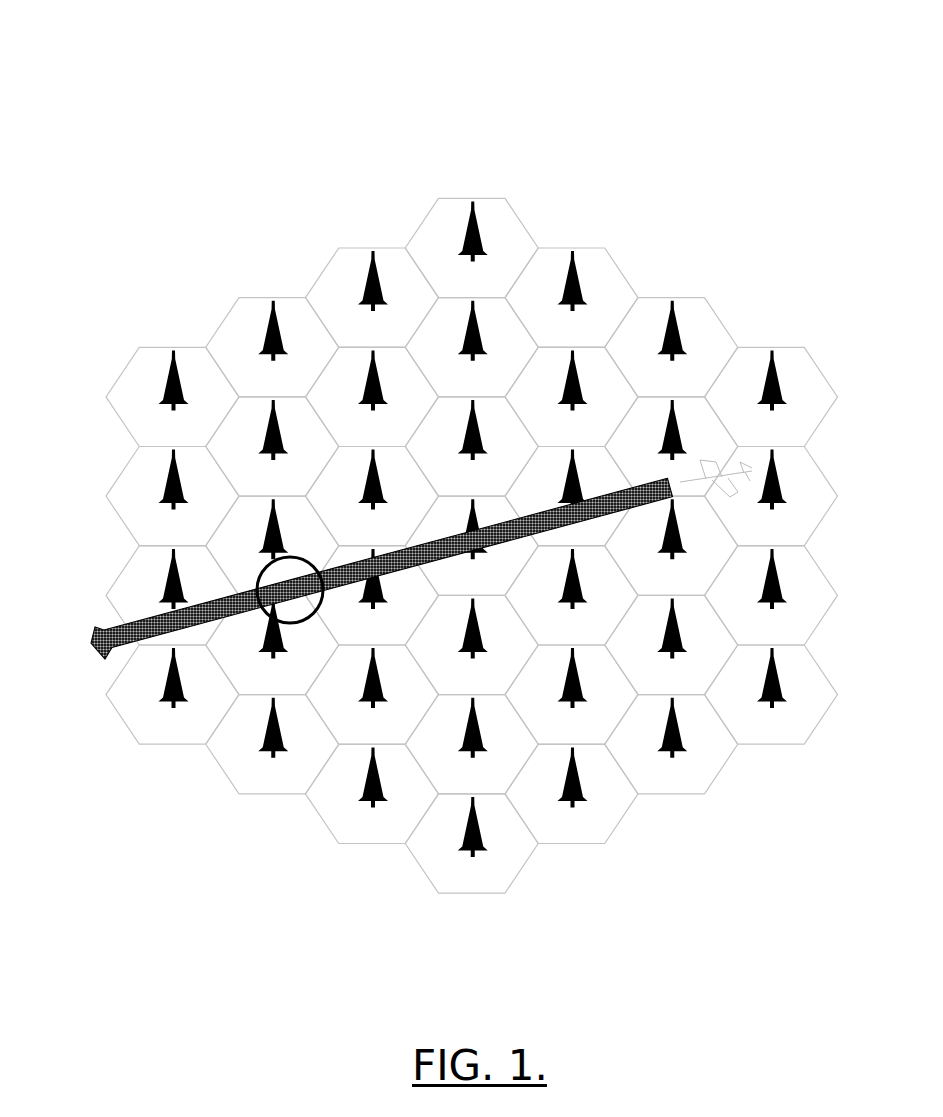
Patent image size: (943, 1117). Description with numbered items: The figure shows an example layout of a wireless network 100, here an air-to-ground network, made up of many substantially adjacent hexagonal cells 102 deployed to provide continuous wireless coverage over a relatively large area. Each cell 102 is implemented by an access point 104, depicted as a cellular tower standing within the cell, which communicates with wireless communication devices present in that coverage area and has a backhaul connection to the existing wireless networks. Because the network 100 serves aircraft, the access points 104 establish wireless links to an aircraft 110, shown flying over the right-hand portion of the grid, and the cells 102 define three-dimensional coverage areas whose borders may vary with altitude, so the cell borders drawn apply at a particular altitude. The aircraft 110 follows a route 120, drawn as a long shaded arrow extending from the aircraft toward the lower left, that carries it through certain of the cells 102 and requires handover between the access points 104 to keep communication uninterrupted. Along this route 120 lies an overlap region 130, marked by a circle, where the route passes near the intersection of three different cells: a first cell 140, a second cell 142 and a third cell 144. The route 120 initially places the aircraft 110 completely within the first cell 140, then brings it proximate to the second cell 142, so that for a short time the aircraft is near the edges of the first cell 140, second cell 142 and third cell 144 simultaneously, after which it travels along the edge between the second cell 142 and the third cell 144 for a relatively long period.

The wireless network 100 is at (721, 66).
The cell 102 is at (470, 198).
The access point 104 is at (487, 232).
The aircraft 110 is at (722, 467).
The route 120 is at (143, 621).
The overlap region 130 is at (262, 572).
The first cell 140 is at (410, 637).
The second cell 142 is at (323, 525).
The third cell 144 is at (312, 688).